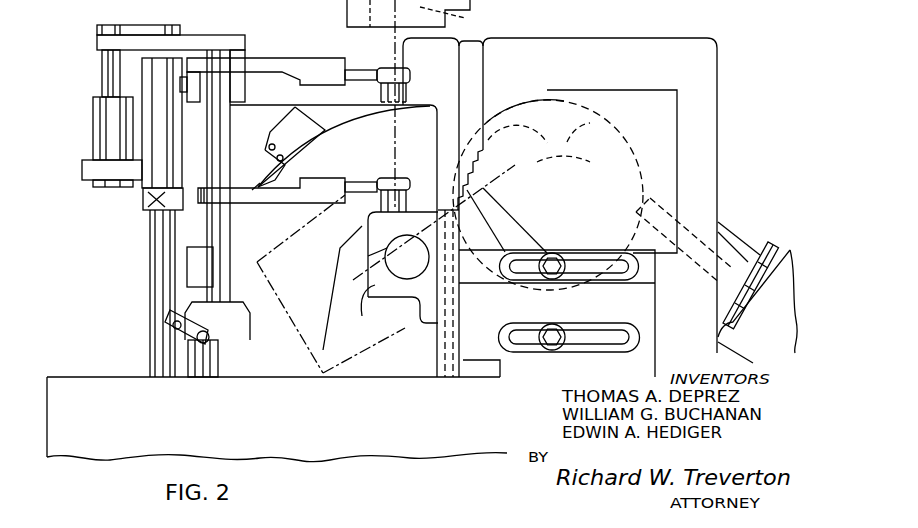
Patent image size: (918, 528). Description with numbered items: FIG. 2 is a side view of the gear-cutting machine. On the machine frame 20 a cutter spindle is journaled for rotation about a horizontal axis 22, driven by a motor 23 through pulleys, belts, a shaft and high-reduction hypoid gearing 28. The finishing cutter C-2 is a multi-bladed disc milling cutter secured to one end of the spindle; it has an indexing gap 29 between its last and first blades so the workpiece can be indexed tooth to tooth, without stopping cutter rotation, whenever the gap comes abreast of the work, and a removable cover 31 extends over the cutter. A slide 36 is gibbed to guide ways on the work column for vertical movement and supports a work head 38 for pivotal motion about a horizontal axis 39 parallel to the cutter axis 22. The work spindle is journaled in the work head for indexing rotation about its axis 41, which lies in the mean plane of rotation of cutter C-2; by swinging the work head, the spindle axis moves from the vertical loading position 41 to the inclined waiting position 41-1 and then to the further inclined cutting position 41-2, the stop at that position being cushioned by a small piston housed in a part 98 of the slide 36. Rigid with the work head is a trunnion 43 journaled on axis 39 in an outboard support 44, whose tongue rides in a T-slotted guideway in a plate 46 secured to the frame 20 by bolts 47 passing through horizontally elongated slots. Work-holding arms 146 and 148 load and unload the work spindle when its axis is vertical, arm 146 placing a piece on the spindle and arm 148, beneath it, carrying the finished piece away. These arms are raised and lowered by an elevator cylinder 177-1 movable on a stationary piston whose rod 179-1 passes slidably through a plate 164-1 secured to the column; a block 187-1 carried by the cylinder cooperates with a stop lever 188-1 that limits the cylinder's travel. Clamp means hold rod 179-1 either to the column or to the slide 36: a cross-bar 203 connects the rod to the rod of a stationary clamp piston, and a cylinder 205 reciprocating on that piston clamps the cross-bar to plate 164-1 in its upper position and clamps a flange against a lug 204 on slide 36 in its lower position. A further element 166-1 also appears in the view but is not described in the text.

The machine frame 20 is at (239, 423).
The horizontal axis 22 is at (560, 201).
The motor 23 is at (770, 338).
The high-reduction hypoid gearing 28 is at (687, 212).
The indexing gap 29 is at (612, 137).
The removable cover 31 is at (648, 128).
The slide 36 is at (260, 138).
The work head 38 is at (365, 351).
The horizontal axis 39 is at (405, 254).
The work spindle axis 41 is at (395, 128).
The waiting position of work spindle axis 41-1 is at (427, 186).
The cutting position of work spindle axis 41-2 is at (505, 167).
The trunnion 43 is at (440, 18).
The outboard support 44 is at (347, 25).
The plate 46 is at (502, 338).
The bolts 47 is at (557, 322).
The part of vertical slide 98 is at (305, 143).
The work-holding arm 146 is at (323, 67).
The work-holding arm 148 is at (306, 178).
The plate 164-1 is at (200, 43).
The motor base 166-1 is at (247, 358).
The elevator cylinder 177-1 is at (150, 183).
The piston rod 179-1 is at (158, 244).
The block 187-1 is at (148, 200).
The stop lever 188-1 is at (168, 320).
The cross-bar 203 is at (116, 29).
The lug 204 is at (93, 170).
The cylinder 205 is at (98, 133).
The finishing cutter C-2 is at (480, 160).